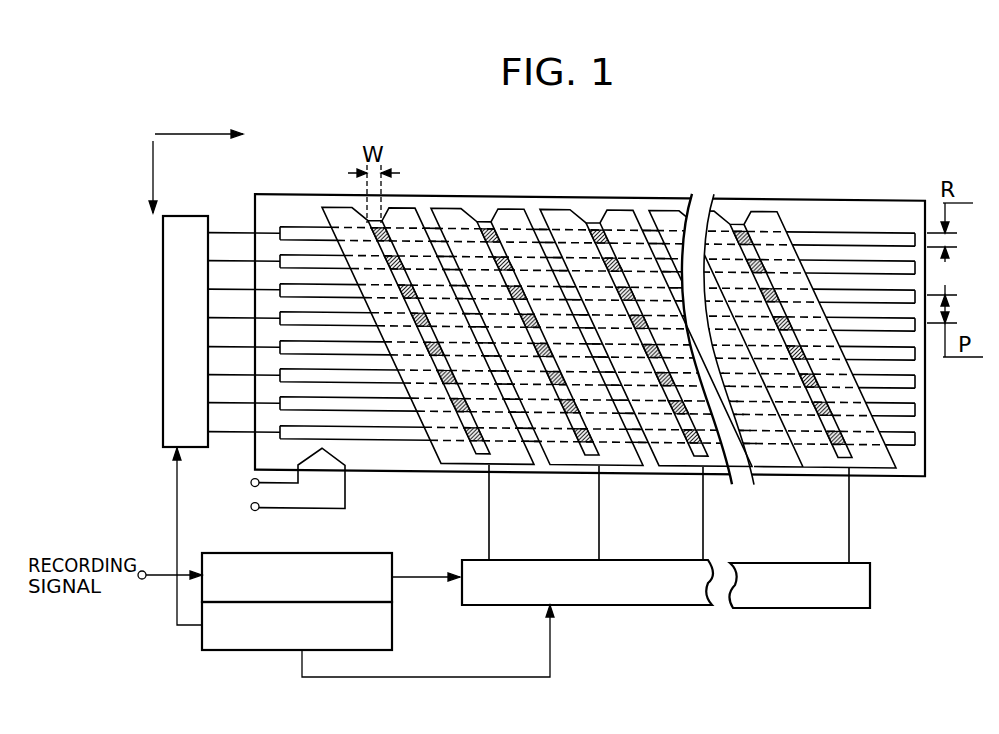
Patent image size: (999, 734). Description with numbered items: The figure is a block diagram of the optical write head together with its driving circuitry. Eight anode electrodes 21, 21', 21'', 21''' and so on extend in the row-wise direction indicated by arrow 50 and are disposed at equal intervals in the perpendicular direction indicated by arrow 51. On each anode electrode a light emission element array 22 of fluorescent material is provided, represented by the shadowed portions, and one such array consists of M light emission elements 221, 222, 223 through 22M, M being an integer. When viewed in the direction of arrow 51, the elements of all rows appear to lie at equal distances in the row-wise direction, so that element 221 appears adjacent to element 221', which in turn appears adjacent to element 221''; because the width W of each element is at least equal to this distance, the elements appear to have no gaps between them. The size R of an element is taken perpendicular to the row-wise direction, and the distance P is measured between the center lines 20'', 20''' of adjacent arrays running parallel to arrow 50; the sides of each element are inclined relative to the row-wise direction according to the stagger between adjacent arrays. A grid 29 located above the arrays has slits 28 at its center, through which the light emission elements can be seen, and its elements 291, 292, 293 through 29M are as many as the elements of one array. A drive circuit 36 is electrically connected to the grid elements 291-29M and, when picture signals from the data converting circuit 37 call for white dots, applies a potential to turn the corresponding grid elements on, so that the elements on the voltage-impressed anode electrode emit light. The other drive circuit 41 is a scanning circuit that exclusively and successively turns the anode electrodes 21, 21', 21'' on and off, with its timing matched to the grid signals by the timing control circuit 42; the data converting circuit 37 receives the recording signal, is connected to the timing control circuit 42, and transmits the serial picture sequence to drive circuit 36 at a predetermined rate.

The arrow 50 is at (194, 134).
The arrow 51 is at (152, 186).
The drive circuit 41 is at (163, 286).
The anode electrode 21 is at (561, 202).
The anode electrode 21' is at (561, 255).
The anode electrode 21'' is at (561, 234).
The anode electrode 21''' is at (596, 363).
The center line 20'' is at (597, 230).
The center line 20''' is at (632, 363).
The slits 28 is at (409, 306).
The light emission element array 22 is at (594, 290).
The light emission element 221 is at (413, 305).
The light emission element 221' is at (430, 218).
The light emission element 221'' is at (461, 231).
The light emission element 222 is at (480, 222).
The light emission element 223 is at (590, 221).
The light emission element 22M is at (790, 310).
The grid 29 is at (669, 507).
The grid element 291 is at (508, 452).
The grid element 292 is at (617, 452).
The grid element 293 is at (717, 457).
The grid element 29M is at (818, 509).
The drive circuit 36 is at (648, 605).
The data converting circuit 37 is at (353, 553).
The timing control circuit 42 is at (240, 650).